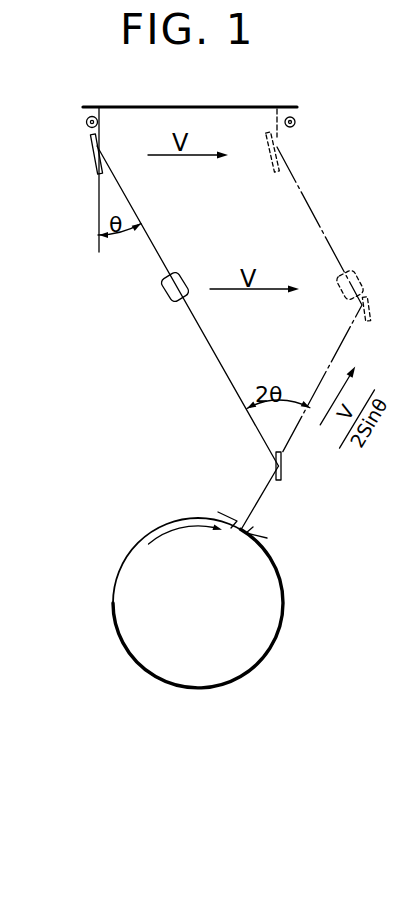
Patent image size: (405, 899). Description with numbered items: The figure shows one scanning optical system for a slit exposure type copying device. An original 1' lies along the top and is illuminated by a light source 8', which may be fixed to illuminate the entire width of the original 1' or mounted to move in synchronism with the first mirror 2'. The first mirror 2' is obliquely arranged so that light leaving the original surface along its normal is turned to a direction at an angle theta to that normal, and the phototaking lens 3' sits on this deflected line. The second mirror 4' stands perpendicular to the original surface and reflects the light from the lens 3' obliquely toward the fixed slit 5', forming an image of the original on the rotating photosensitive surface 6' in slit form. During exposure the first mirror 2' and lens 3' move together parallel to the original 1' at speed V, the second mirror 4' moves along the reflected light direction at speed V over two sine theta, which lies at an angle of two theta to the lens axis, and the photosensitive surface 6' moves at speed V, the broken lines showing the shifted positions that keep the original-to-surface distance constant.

The original 1' is at (190, 157).
The first mirror 2' is at (163, 153).
The phototaking lens 3' is at (246, 288).
The second mirror 4' is at (323, 391).
The fixed slit 5' is at (251, 519).
The photosensitive surface 6' is at (218, 603).
The light source 8' is at (199, 125).